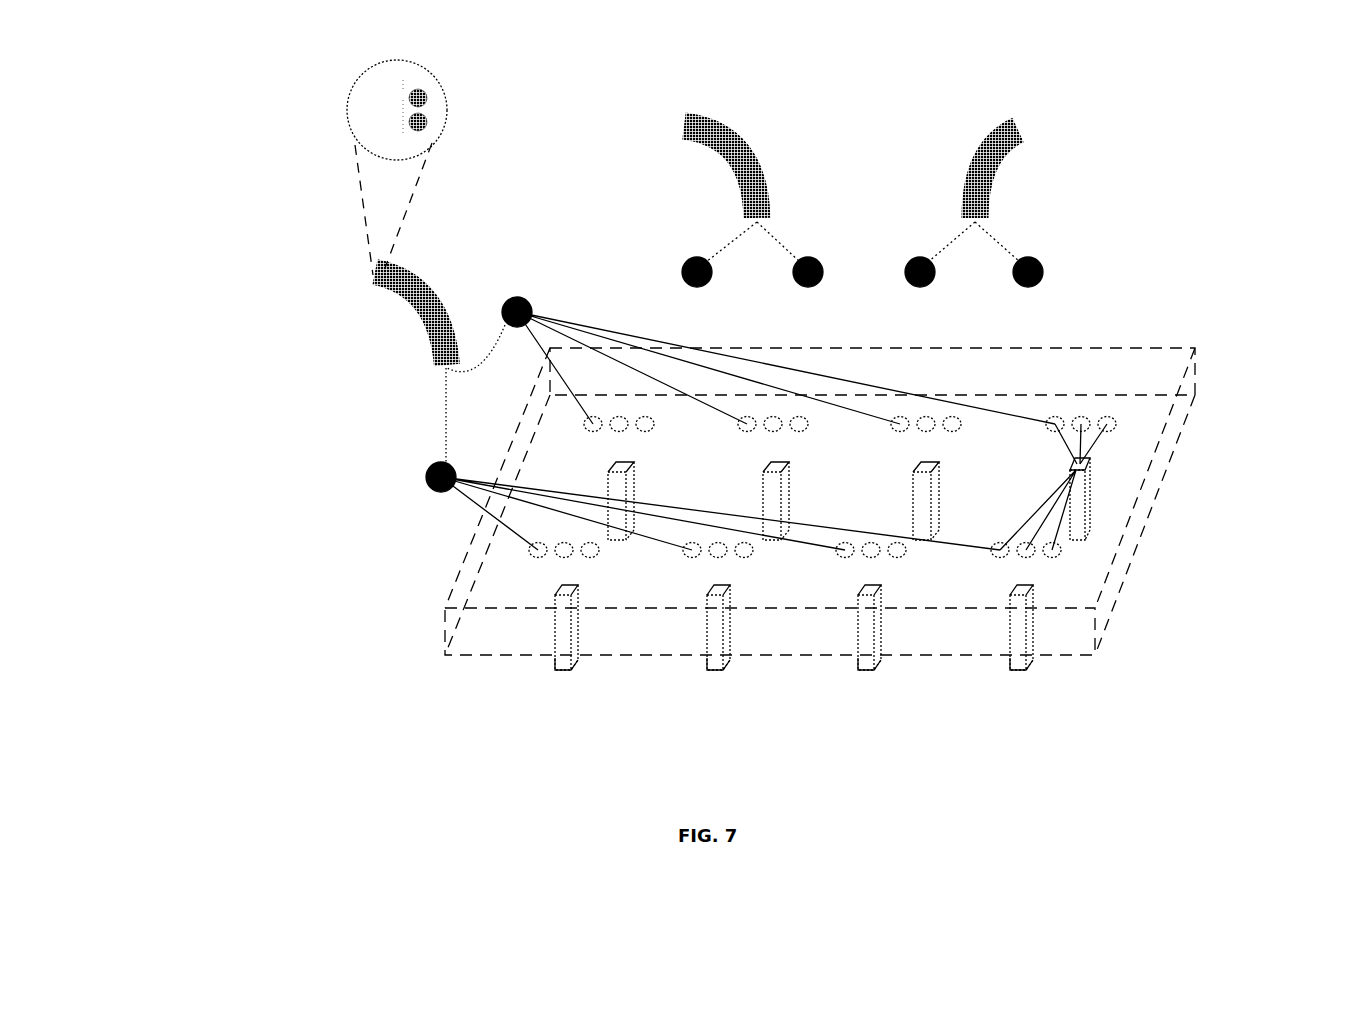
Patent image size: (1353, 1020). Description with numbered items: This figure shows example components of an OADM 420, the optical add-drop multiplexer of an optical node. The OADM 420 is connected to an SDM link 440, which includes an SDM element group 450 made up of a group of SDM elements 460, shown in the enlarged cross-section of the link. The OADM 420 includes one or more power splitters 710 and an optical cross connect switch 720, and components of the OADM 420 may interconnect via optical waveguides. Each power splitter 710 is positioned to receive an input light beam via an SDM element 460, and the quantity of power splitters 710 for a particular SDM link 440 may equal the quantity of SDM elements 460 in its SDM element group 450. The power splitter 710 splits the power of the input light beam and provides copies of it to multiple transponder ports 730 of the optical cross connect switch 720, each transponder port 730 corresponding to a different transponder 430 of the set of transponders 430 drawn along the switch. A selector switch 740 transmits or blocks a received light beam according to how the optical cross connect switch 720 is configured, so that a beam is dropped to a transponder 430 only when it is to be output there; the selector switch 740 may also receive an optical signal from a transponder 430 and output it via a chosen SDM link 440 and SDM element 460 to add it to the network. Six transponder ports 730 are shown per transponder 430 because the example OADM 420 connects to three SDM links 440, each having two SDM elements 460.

The OADM 420 is at (287, 44).
The SDM element group 450 is at (346, 108).
The SDM elements 460 is at (427, 106).
The SDM link 440 is at (439, 287).
The power splitter 710 is at (503, 316).
The optical cross connect switch 720 is at (449, 590).
The transponder port 730 is at (1111, 418).
The selector switch 740 is at (1089, 467).
The transponders 430 is at (701, 668).